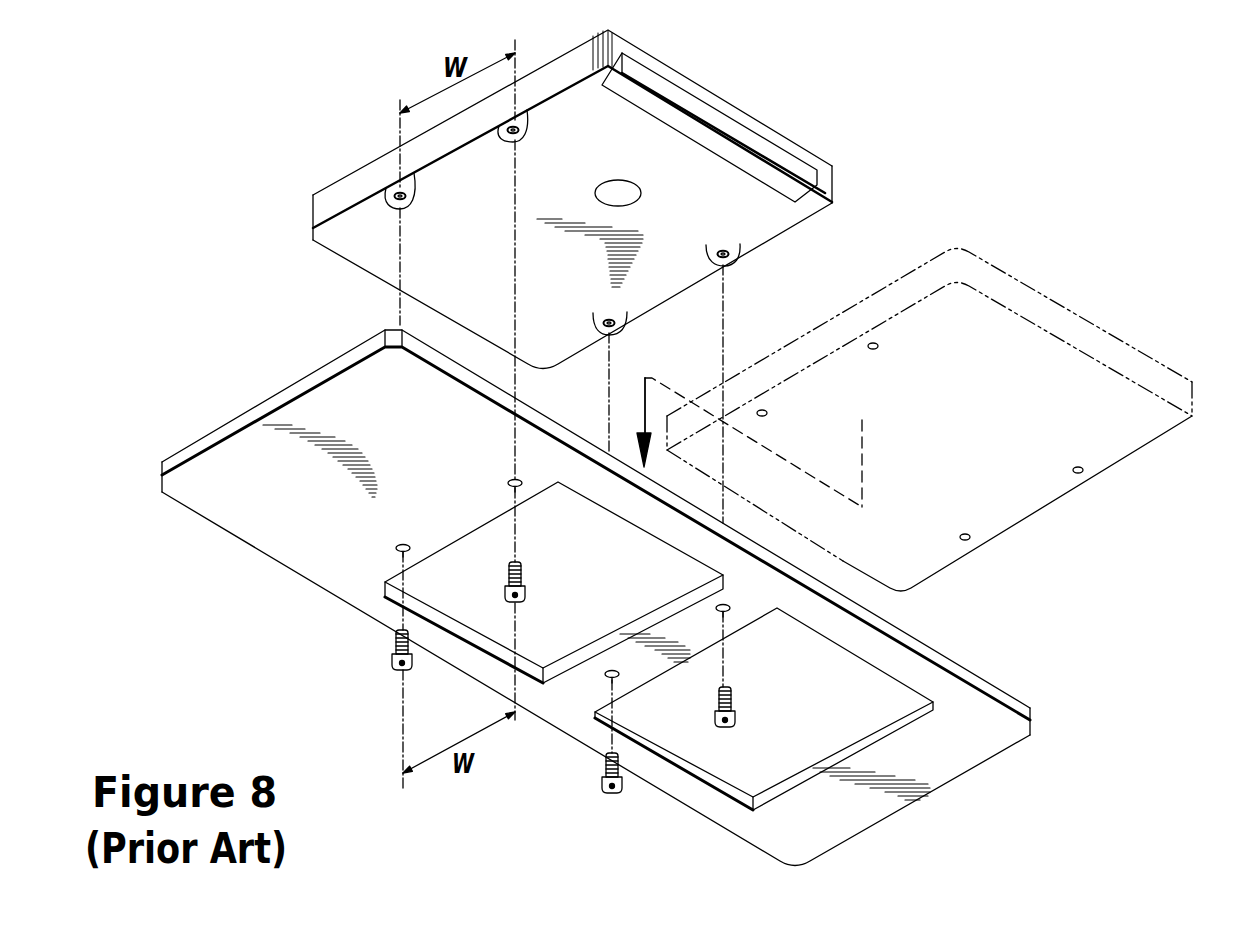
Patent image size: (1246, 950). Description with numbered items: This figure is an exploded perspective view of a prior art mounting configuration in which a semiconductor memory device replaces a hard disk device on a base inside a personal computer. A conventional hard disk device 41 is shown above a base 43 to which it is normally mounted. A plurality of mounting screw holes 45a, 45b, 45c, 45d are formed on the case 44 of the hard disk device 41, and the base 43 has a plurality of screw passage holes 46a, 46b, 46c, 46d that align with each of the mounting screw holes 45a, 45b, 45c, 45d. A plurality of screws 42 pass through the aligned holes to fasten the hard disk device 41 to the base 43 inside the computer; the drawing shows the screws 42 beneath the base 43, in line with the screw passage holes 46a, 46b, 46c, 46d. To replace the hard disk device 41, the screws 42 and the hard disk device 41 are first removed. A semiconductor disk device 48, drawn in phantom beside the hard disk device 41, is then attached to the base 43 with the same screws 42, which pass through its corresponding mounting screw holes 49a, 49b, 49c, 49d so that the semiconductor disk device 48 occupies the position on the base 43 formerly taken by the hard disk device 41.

The hard disk device 41 is at (331, 169).
The screws 42 is at (523, 582).
The base 43 is at (208, 423).
The case 44 is at (567, 57).
The mounting screw hole 45a is at (518, 134).
The mounting screw hole 45b is at (404, 200).
The mounting screw hole 45c is at (721, 262).
The mounting screw hole 45d is at (607, 332).
The screw passage hole 46a is at (510, 481).
The screw passage hole 46b is at (399, 547).
The screw passage hole 46c is at (716, 607).
The screw passage hole 46d is at (605, 671).
The semiconductor disk device 48 is at (929, 376).
The mounting screw hole 49a is at (873, 350).
The mounting screw hole 49b is at (766, 417).
The mounting screw hole 49c is at (1073, 476).
The mounting screw hole 49d is at (960, 538).